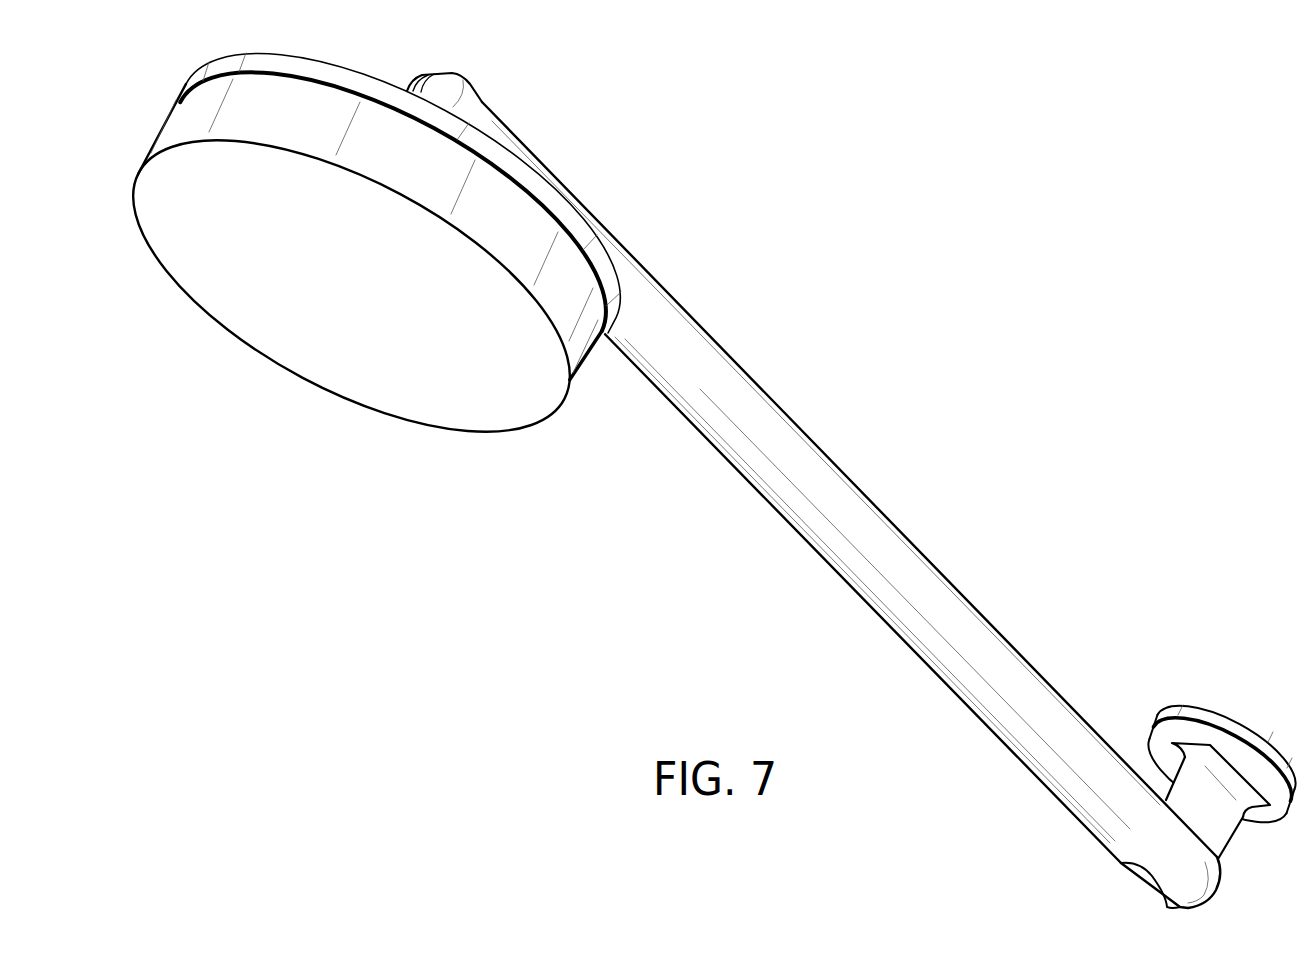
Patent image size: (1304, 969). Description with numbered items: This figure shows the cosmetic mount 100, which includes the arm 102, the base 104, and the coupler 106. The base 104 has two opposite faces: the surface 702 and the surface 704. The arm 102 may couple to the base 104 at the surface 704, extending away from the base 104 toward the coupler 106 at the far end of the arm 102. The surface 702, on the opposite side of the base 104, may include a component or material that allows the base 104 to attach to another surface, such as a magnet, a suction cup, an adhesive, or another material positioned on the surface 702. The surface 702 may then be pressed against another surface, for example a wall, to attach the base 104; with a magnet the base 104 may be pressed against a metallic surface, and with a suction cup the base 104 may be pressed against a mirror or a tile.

The cosmetic mount 100 is at (925, 283).
The arm 102 is at (841, 498).
The base 104 is at (545, 212).
The coupler 106 is at (1229, 722).
The surface 702 is at (316, 358).
The surface 704 is at (365, 73).